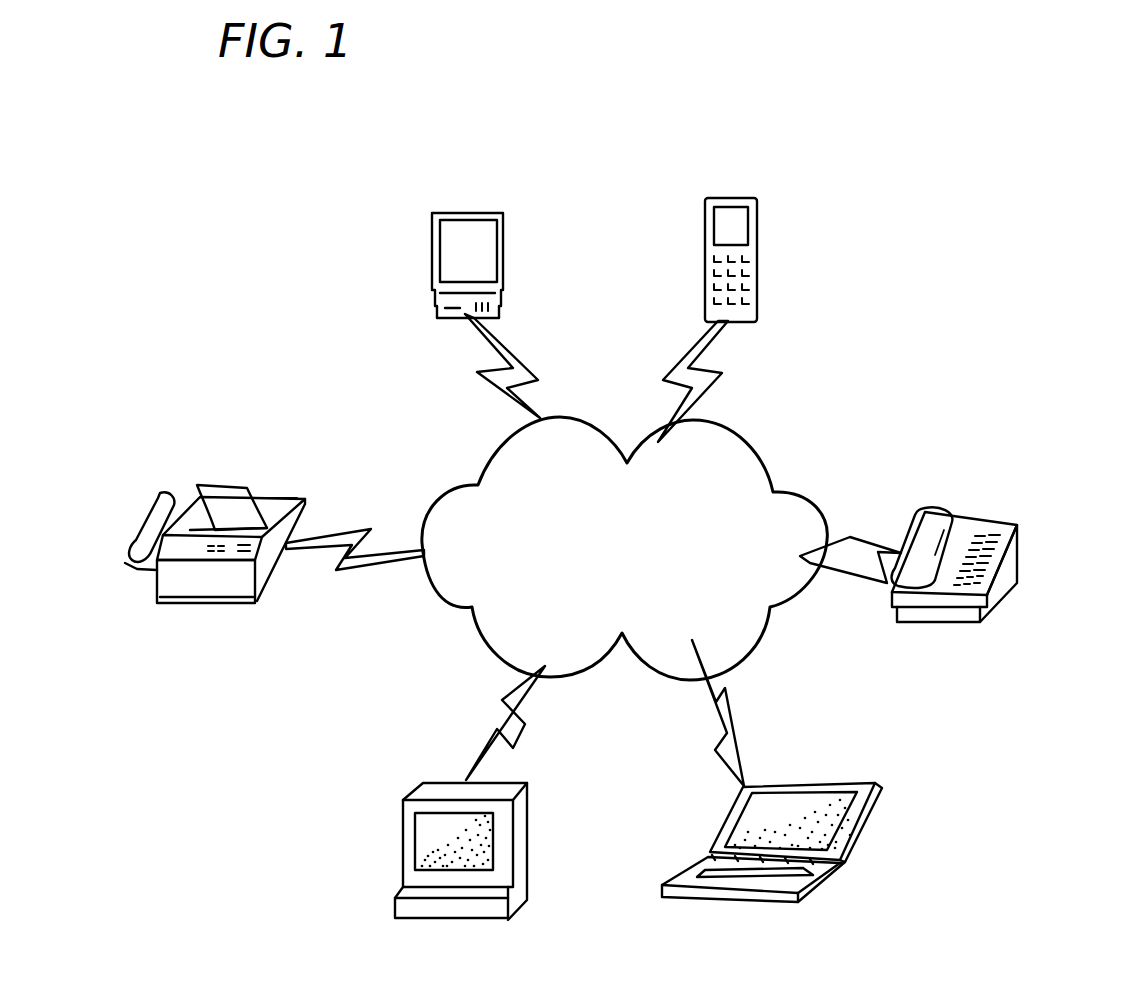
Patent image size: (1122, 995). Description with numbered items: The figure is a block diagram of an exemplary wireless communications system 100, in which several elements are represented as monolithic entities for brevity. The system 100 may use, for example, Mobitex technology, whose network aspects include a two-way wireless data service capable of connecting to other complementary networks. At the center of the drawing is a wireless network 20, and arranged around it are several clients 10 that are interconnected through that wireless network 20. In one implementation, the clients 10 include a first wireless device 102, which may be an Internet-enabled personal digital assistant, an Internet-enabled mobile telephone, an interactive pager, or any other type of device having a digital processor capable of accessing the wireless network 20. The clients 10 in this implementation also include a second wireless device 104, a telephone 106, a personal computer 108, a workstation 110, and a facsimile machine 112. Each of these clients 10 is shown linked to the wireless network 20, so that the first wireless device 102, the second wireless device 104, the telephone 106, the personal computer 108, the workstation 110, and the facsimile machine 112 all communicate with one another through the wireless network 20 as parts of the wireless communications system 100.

The wireless communications system 100 is at (531, 115).
The clients 10 is at (677, 261).
The wireless network 20 is at (510, 438).
The first wireless device 102 is at (433, 243).
The second wireless device 104 is at (760, 258).
The telephone 106 is at (1017, 527).
The personal computer 108 is at (727, 818).
The workstation 110 is at (435, 781).
The facsimile machine 112 is at (157, 496).